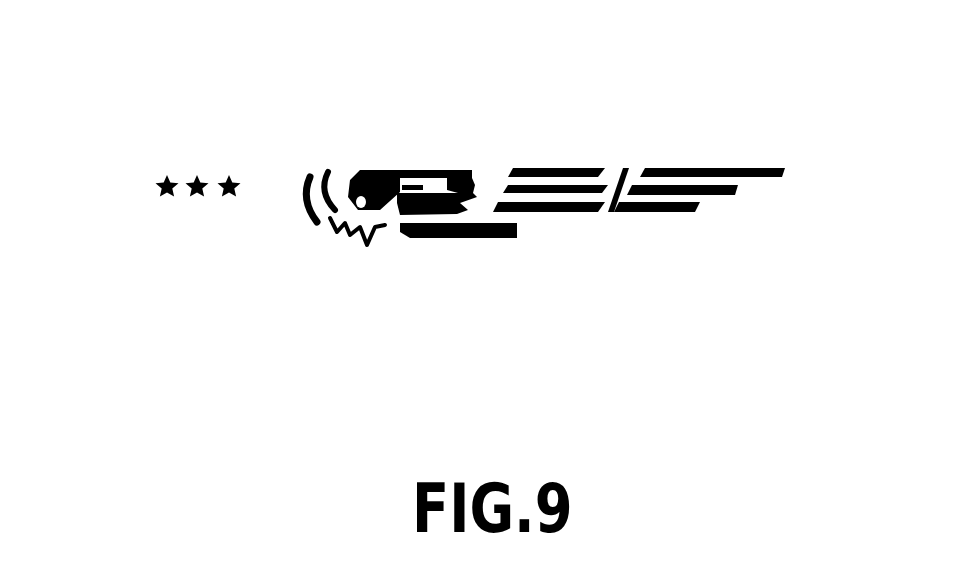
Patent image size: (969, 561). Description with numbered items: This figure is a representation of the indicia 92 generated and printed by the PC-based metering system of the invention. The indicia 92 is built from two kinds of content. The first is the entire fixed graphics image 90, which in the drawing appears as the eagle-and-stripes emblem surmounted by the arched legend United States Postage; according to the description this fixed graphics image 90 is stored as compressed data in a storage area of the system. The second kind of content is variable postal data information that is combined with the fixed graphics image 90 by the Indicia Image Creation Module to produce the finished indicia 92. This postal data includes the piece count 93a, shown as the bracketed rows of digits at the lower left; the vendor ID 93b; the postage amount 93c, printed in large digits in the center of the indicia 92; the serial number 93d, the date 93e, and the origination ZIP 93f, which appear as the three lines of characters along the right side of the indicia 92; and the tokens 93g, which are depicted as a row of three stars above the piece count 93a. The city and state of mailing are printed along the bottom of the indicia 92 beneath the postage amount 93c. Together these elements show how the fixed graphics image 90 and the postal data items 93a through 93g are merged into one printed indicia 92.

The fixed graphics image 90 is at (568, 138).
The indicia 92 is at (409, 372).
The piece count 93a is at (148, 243).
The vendor ID 93b is at (227, 238).
The postage amount 93c is at (433, 258).
The serial number 93d is at (790, 258).
The date 93e is at (795, 300).
The origination ZIP 93f is at (793, 344).
The tokens 93g is at (178, 223).